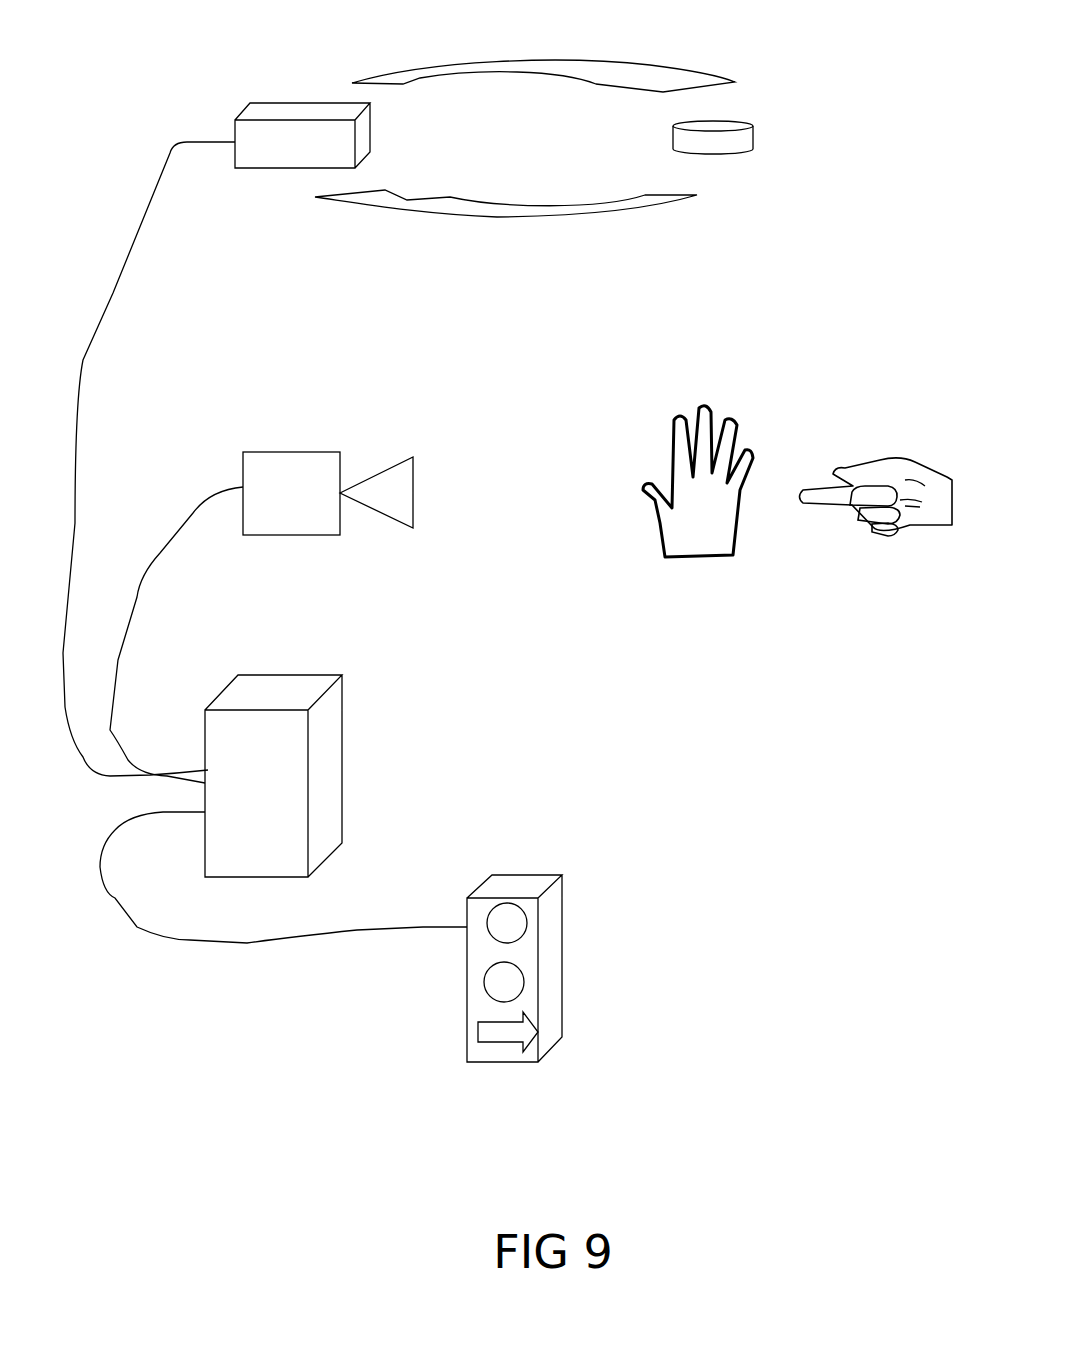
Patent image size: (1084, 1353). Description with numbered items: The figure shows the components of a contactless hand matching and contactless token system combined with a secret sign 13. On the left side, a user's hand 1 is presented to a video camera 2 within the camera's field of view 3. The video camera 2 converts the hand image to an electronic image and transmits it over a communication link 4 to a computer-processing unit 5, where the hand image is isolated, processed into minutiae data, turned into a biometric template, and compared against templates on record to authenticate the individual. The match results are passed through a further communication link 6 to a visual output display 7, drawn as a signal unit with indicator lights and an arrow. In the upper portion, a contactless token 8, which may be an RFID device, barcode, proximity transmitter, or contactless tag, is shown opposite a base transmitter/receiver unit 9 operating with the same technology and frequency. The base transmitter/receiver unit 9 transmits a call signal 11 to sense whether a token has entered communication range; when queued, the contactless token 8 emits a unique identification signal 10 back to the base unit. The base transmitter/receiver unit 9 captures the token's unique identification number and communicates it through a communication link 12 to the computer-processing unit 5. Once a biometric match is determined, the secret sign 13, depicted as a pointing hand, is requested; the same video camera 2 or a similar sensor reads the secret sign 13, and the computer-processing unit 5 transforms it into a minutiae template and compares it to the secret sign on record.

The hand 1 is at (692, 560).
The video camera 2 is at (245, 462).
The field of view 3 is at (590, 562).
The communication link 4 is at (125, 630).
The computer-processing unit 5 is at (342, 750).
The communication link 6 is at (263, 938).
The visual output display 7 is at (520, 890).
The contactless token 8 is at (755, 138).
The base transmitter/receiver unit 9 is at (268, 170).
The unique identification signal 10 is at (597, 220).
The call signal 11 is at (692, 72).
The communication link 12 is at (113, 299).
The secret sign 13 is at (913, 535).